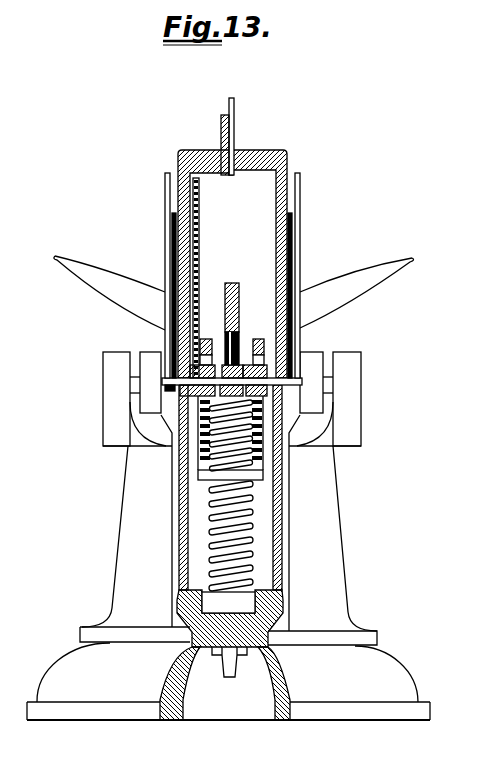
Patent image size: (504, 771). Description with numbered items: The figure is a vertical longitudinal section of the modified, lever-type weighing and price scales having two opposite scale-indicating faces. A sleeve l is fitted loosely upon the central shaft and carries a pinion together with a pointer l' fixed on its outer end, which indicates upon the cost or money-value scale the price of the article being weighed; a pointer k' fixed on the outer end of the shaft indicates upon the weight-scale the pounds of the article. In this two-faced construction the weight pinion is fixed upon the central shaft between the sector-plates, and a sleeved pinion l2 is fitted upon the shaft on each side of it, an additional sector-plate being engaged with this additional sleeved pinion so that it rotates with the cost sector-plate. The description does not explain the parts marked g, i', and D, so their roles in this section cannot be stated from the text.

The piston rod g is at (234, 136).
The guide rods i' is at (229, 275).
The pointer k' is at (231, 295).
The pointer l' is at (207, 344).
The sleeve l is at (202, 366).
The sleeved pinion l2 is at (266, 335).
The spring barrel D is at (230, 531).